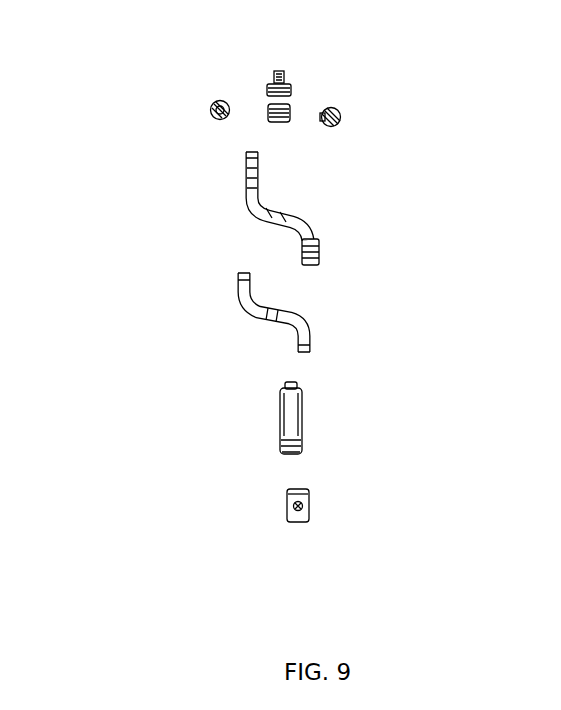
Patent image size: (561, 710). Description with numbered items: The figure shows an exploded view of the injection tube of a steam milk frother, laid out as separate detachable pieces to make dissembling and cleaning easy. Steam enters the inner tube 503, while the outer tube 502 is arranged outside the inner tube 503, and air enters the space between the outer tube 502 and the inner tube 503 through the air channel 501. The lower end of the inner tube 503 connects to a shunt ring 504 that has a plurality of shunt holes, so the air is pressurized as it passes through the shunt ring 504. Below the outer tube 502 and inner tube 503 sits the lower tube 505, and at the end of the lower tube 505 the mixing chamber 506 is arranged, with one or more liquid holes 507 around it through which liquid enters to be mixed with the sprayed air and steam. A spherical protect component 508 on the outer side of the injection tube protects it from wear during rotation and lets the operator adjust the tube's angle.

The air channel 501 is at (270, 90).
The outer tube 502 is at (240, 305).
The inner tube 503 is at (250, 208).
The shunt ring 504 is at (316, 258).
The lower tube 505 is at (278, 437).
The mixing chamber 506 is at (310, 498).
The liquid hole 507 is at (295, 503).
The protect component 508 is at (342, 117).